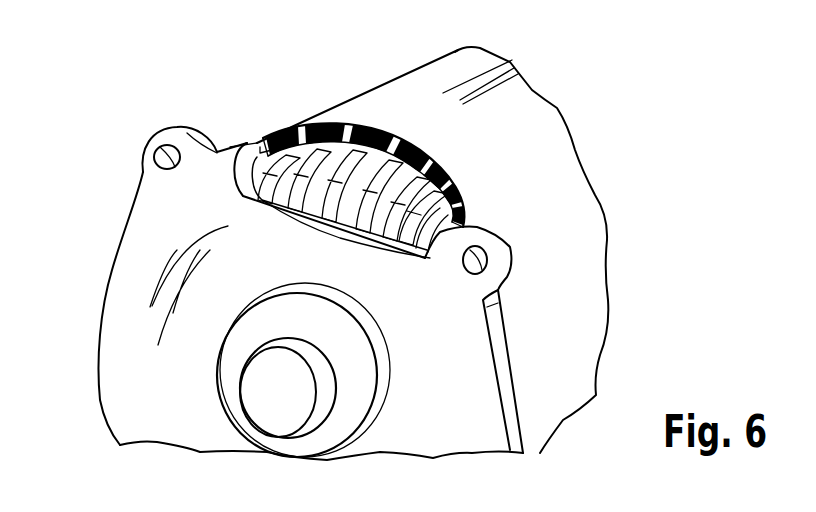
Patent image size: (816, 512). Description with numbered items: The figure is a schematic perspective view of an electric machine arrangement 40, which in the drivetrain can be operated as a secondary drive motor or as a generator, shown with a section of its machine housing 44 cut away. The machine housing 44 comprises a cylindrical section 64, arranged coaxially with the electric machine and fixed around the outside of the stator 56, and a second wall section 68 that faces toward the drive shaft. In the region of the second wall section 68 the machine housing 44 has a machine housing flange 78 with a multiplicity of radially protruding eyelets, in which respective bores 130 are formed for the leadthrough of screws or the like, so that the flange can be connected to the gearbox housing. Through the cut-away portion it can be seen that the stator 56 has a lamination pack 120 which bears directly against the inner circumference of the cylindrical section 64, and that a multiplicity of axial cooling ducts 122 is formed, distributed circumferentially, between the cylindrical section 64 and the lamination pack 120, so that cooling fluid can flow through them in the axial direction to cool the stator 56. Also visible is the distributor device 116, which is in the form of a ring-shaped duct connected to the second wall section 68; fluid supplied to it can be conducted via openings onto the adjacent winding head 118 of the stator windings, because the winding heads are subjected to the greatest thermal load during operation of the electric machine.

The electric machine arrangement 40 is at (638, 136).
The machine housing 44 is at (357, 95).
The stator 56 is at (373, 140).
The cylindrical section 64 is at (577, 252).
The second wall section 68 is at (122, 292).
The machine housing flange 78 is at (188, 127).
The distributor device 116 is at (272, 143).
The winding head 118 is at (386, 226).
The lamination pack 120 is at (463, 198).
The cooling ducts 122 is at (448, 173).
The bores 130 is at (163, 157).